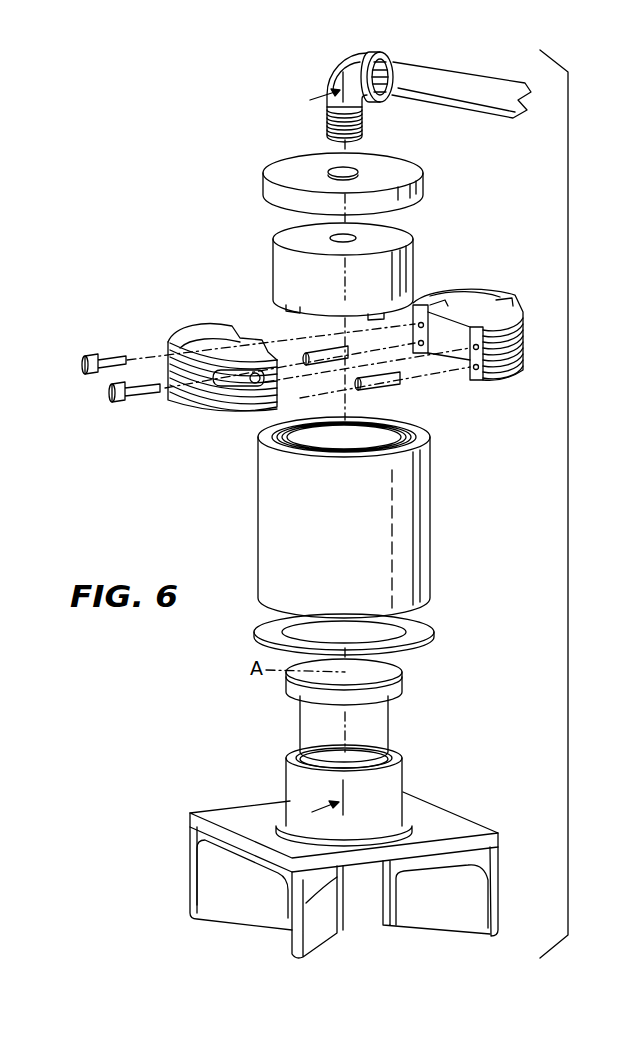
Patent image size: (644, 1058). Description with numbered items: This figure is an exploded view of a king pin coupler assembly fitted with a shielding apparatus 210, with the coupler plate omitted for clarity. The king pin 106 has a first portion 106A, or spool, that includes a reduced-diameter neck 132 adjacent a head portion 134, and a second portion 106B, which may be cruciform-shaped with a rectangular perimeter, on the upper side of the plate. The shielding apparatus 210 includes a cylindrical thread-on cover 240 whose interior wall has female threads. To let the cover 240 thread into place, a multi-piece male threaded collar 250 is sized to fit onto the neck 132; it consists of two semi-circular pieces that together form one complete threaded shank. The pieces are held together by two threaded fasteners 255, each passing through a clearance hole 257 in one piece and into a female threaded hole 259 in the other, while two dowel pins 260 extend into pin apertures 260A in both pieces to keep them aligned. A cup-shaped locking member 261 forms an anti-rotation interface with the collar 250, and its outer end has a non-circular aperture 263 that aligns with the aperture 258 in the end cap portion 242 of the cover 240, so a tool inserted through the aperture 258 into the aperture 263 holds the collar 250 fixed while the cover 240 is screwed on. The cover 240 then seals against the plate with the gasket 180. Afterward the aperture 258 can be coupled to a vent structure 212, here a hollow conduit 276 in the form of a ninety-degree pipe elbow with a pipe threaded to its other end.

The king pin 106 is at (127, 722).
The first portion 106A is at (276, 752).
The second portion 106B is at (187, 838).
The neck 132 is at (375, 729).
The head portion 134 is at (392, 696).
The gasket 180 is at (430, 628).
The shielding apparatus 210 is at (568, 516).
The vent structure 212 is at (349, 93).
The thread-on cover 240 is at (403, 532).
The end cap portion 242 is at (337, 177).
The threaded collar 250 is at (361, 361).
The threaded fasteners 255 is at (118, 400).
The clearance hole 257 is at (253, 376).
The aperture 258 is at (357, 172).
The female threaded hole 259 is at (430, 328).
The dowel pins 260 is at (320, 362).
The pin apertures 260A is at (473, 370).
The cup-shaped locking member 261 is at (338, 265).
The non-circular aperture 263 is at (357, 238).
The hollow conduit 276 is at (384, 96).